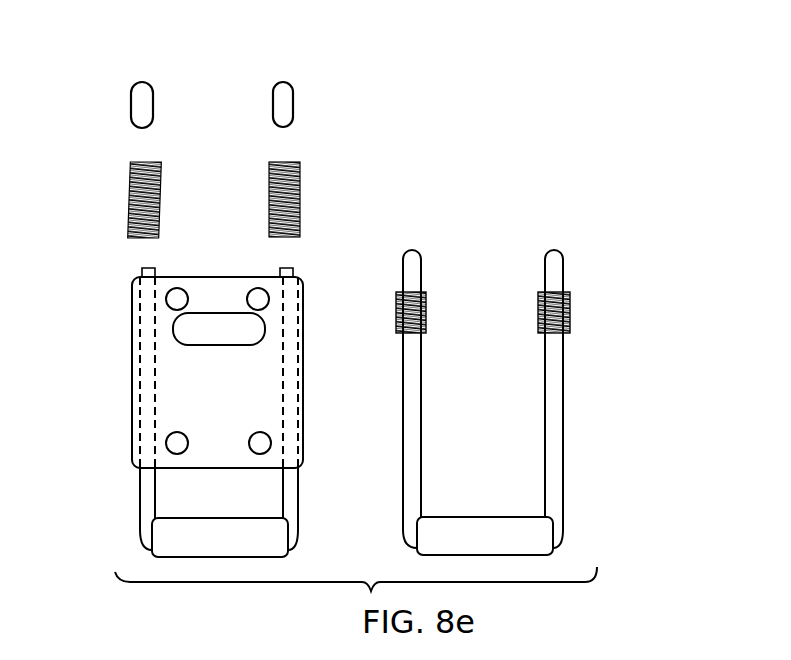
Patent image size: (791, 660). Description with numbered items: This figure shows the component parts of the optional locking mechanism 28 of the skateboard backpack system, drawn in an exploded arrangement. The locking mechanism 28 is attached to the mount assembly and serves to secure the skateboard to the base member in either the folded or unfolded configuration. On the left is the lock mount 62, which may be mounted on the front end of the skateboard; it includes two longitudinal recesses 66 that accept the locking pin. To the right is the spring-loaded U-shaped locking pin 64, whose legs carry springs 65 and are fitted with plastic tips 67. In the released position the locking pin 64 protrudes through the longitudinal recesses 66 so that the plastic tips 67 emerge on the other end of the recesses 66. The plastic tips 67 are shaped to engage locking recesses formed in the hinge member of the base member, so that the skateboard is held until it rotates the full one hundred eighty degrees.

The locking mechanism 28 is at (660, 145).
The lock mount 62 is at (127, 423).
The U-shaped locking pin 64 is at (570, 430).
The springs 65 is at (268, 205).
The longitudinal recesses 66 is at (285, 422).
The plastic tips 67 is at (352, 217).